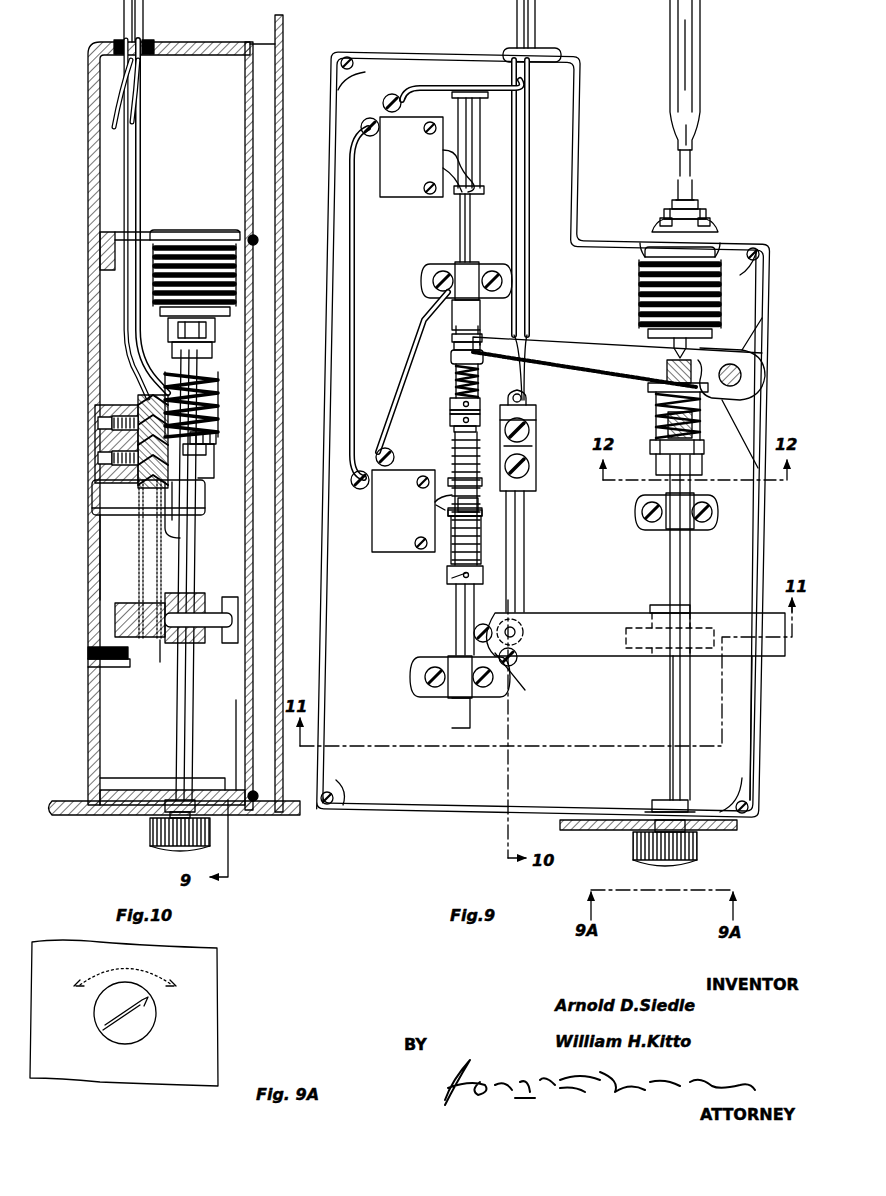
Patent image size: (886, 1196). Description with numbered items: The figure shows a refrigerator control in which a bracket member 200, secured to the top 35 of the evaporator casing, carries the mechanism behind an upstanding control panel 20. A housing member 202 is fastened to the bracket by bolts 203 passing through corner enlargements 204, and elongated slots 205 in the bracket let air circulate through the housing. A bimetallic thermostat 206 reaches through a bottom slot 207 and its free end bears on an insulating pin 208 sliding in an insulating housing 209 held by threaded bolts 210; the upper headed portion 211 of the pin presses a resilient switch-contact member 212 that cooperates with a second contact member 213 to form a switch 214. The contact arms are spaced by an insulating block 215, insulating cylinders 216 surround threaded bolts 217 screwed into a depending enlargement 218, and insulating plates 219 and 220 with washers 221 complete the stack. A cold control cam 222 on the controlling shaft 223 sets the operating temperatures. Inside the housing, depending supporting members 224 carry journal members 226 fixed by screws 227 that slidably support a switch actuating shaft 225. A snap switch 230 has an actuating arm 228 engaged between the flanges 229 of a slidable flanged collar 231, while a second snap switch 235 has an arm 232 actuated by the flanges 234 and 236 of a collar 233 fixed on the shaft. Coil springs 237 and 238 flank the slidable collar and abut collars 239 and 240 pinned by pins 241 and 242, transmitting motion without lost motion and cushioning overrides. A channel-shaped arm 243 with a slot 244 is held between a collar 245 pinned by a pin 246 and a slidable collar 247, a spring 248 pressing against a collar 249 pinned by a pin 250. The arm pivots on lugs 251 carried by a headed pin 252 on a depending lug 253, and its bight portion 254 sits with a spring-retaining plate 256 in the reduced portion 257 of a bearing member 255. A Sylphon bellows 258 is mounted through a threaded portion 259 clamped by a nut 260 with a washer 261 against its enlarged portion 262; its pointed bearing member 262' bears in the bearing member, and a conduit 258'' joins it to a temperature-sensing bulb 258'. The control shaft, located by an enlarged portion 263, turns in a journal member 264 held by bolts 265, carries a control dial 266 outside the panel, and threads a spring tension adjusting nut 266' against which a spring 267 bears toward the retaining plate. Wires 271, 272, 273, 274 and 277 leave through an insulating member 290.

In FIG. 10, the control panel 20 is at (250, 822).
In FIG. 9A, the control panel 20 is at (205, 1028).
In FIG. 10, the top of the evaporator casing 35 is at (282, 437).
In FIG. 10, the bracket member 200 is at (252, 760).
In FIG. 10, the housing member 202 is at (88, 720).
In FIG. 9, the housing member 202 is at (400, 818).
In FIG. 10, the bolts 203 is at (250, 240).
In FIG. 9, the bolts 203 is at (338, 58).
In FIG. 10, the corner enlargement 204 is at (100, 790).
In FIG. 9, the corner enlargement 204 is at (360, 62).
In FIG. 10, the elongated slots 205 is at (252, 520).
In FIG. 10, the bimetallic thermostat 206 is at (234, 612).
In FIG. 9, the bimetallic thermostat 206 is at (572, 642).
In FIG. 10, the bottom slot 207 is at (240, 600).
In FIG. 9, the bottom slot 207 is at (755, 670).
In FIG. 10, the insulating pin 208 is at (213, 630).
In FIG. 10, the insulating housing 209 is at (128, 604).
In FIG. 9, the insulating housing 209 is at (540, 672).
In FIG. 10, the threaded bolts 210 is at (133, 668).
In FIG. 9, the threaded bolts 210 is at (522, 672).
In FIG. 10, the upper headed portion 211 is at (160, 645).
In FIG. 10, the resilient switch-contact member 212 is at (156, 556).
In FIG. 9, the resilient switch-contact member 212 is at (532, 583).
In FIG. 10, the switch-contact member 213 is at (138, 528).
In FIG. 10, the switch 214 is at (150, 540).
In FIG. 10, the insulating block 215 is at (150, 392).
In FIG. 9, the insulating block 215 is at (532, 408).
In FIG. 10, the insulating cylinders 216 is at (100, 412).
In FIG. 10, the threaded bolts 217 is at (118, 433).
In FIG. 9, the threaded bolts 217 is at (536, 476).
In FIG. 10, the depending enlargement 218 is at (100, 467).
In FIG. 10, the insulating plate 219 is at (135, 485).
In FIG. 10, the insulating plate 220 is at (172, 500).
In FIG. 9, the insulating plate 220 is at (533, 425).
In FIG. 10, the washers 221 is at (192, 455).
In FIG. 9, the washers 221 is at (536, 455).
In FIG. 9, the cold control cam 222 is at (705, 628).
In FIG. 10, the controlling shaft 223 is at (175, 726).
In FIG. 9, the controlling shaft 223 is at (668, 770).
In FIG. 9, the depending supporting members 224 is at (455, 262).
In FIG. 9, the switch actuating shaft 225 is at (474, 240).
In FIG. 9, the journal members 226 is at (438, 298).
In FIG. 9, the screws 227 is at (436, 272).
In FIG. 9, the actuating arm 228 is at (445, 502).
In FIG. 9, the flanges 229 is at (482, 512).
In FIG. 9, the snap switch 230 is at (413, 511).
In FIG. 9, the flanged collar 231 is at (478, 498).
In FIG. 9, the actuating arm 232 is at (450, 168).
In FIG. 9, the collar 233 is at (472, 140).
In FIG. 9, the flange 234 is at (478, 94).
In FIG. 9, the snap switch 235 is at (421, 157).
In FIG. 9, the flange 236 is at (452, 195).
In FIG. 9, the coil spring 237 is at (455, 461).
In FIG. 9, the coil spring 238 is at (480, 545).
In FIG. 9, the collar 239 is at (450, 420).
In FIG. 9, the collar 240 is at (450, 572).
In FIG. 9, the pin 241 is at (458, 430).
In FIG. 9, the pin 242 is at (455, 578).
In FIG. 10, the channel-shaped arm 243 is at (215, 340).
In FIG. 9, the channel-shaped arm 243 is at (605, 335).
In FIG. 9, the slot 244 is at (455, 348).
In FIG. 9, the collar 245 is at (456, 338).
In FIG. 9, the pin 246 is at (478, 338).
In FIG. 9, the collar 247 is at (452, 360).
In FIG. 9, the spring 248 is at (455, 380).
In FIG. 9, the collar 249 is at (450, 399).
In FIG. 9, the pin 250 is at (450, 408).
In FIG. 9, the pivoting lug 251 is at (752, 362).
In FIG. 9, the headed pin 252 is at (746, 378).
In FIG. 9, the depending lug 253 is at (752, 405).
In FIG. 9, the bight portion 254 is at (588, 362).
In FIG. 9, the bearing member 255 is at (668, 372).
In FIG. 9, the spring-retaining plate 256 is at (650, 388).
In FIG. 9, the reduced portion 257 is at (658, 404).
In FIG. 10, the Sylphon bellows 258 is at (194, 251).
In FIG. 9, the Sylphon bellows 258 is at (644, 299).
In FIG. 9, the bulb 258' is at (656, 75).
In FIG. 9, the conduit 258'' is at (648, 163).
In FIG. 9, the threaded portion 259 is at (702, 206).
In FIG. 9, the nut 260 is at (665, 218).
In FIG. 9, the washer 261 is at (655, 230).
In FIG. 10, the enlarged portion 262 is at (177, 223).
In FIG. 9, the enlarged portion 262 is at (643, 257).
In FIG. 9, the pointed hard steel bearing member 262' is at (778, 333).
In FIG. 9, the enlarged portion of the shaft 263 is at (652, 806).
In FIG. 9, the journal member 264 is at (672, 515).
In FIG. 9, the bolts 265 is at (648, 512).
In FIG. 10, the control dial 266 is at (135, 825).
In FIG. 9, the control dial 266 is at (664, 843).
In FIG. 9A, the control dial 266 is at (125, 1022).
In FIG. 10, the spring tension adjusting nut 266' is at (248, 458).
In FIG. 9, the spring tension adjusting nut 266' is at (697, 453).
In FIG. 10, the spring 267 is at (215, 383).
In FIG. 9, the spring 267 is at (536, 429).
In FIG. 10, the wire 271 is at (128, 74).
In FIG. 9, the wire 271 is at (430, 88).
In FIG. 10, the wire 272 is at (141, 148).
In FIG. 9, the wire 272 is at (530, 169).
In FIG. 9, the lead wire 273 is at (350, 192).
In FIG. 10, the wire 274 is at (141, 80).
In FIG. 9, the wire 274 is at (395, 350).
In FIG. 10, the wire 277 is at (124, 147).
In FIG. 9, the wire 277 is at (522, 205).
In FIG. 10, the insulating member 290 is at (120, 40).
In FIG. 9, the insulating member 290 is at (540, 48).